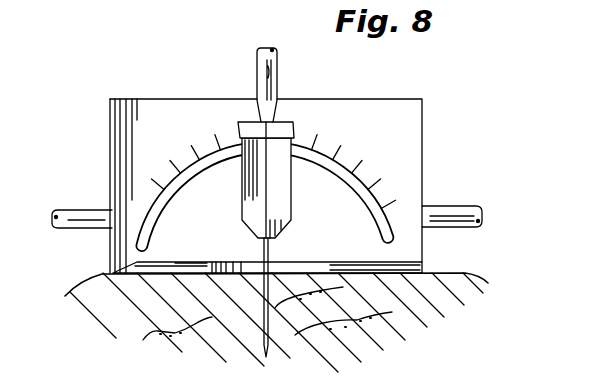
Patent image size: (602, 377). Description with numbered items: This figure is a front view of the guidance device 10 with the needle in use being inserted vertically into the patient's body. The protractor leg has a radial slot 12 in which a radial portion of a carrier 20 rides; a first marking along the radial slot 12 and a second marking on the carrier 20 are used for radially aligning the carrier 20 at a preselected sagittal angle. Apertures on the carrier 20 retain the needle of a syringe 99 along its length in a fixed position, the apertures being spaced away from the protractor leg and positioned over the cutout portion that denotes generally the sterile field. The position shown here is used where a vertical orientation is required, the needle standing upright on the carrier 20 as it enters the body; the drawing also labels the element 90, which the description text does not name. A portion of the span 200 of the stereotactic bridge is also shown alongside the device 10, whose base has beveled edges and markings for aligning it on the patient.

The guidance device 10 is at (187, 100).
The radial slot 12 is at (385, 216).
The carrier 20 is at (282, 130).
The probe body 90 is at (263, 202).
The syringe 99 is at (267, 80).
The span 200 is at (82, 210).